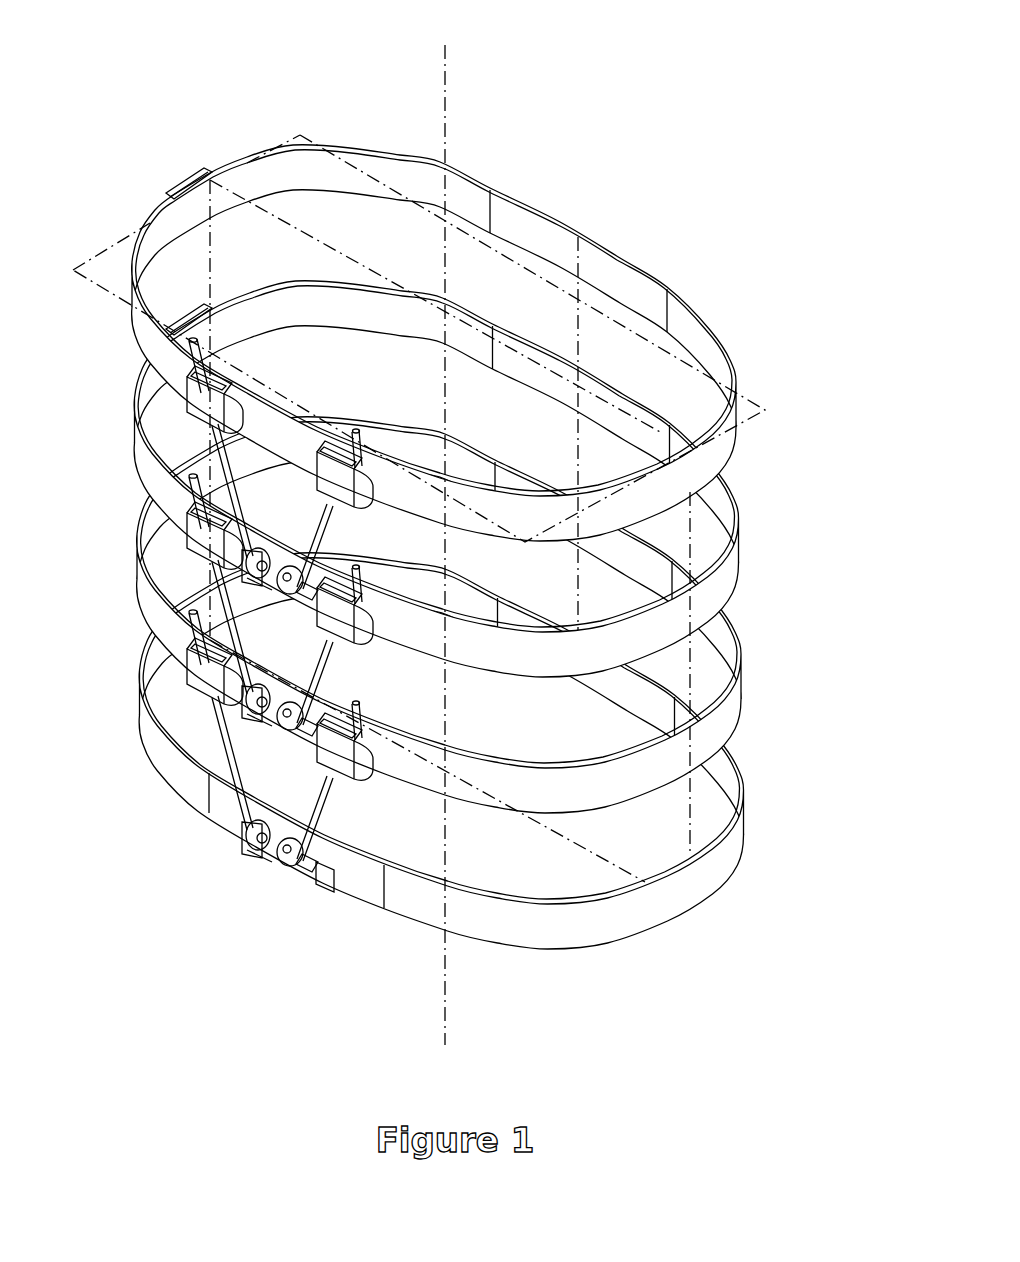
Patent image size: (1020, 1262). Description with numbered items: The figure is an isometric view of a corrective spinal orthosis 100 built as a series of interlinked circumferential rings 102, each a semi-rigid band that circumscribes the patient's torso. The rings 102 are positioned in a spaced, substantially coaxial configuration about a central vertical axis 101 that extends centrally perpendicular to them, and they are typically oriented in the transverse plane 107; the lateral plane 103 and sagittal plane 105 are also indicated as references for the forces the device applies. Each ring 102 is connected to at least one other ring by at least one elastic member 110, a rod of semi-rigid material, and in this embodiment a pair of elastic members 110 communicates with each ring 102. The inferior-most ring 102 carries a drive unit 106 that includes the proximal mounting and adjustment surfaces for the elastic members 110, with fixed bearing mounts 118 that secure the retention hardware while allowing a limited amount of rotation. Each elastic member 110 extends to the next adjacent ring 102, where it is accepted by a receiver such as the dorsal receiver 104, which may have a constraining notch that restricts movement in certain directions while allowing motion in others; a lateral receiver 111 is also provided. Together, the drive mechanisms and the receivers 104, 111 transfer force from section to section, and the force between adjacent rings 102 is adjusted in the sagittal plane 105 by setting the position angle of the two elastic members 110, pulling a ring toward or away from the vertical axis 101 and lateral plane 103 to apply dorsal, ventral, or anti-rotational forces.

The corrective spinal orthosis 100 is at (459, 486).
The vertical axis 101 is at (450, 117).
The circumferential ring 102 is at (685, 887).
The lateral plane 103 is at (230, 195).
The dorsal receiver 104 is at (210, 397).
The sagittal plane 105 is at (505, 277).
The drive unit 106 is at (272, 851).
The transverse plane 107 is at (610, 315).
The elastic member 110 is at (217, 610).
The lateral receiver 111 is at (172, 198).
The bearing mount 118 is at (258, 733).